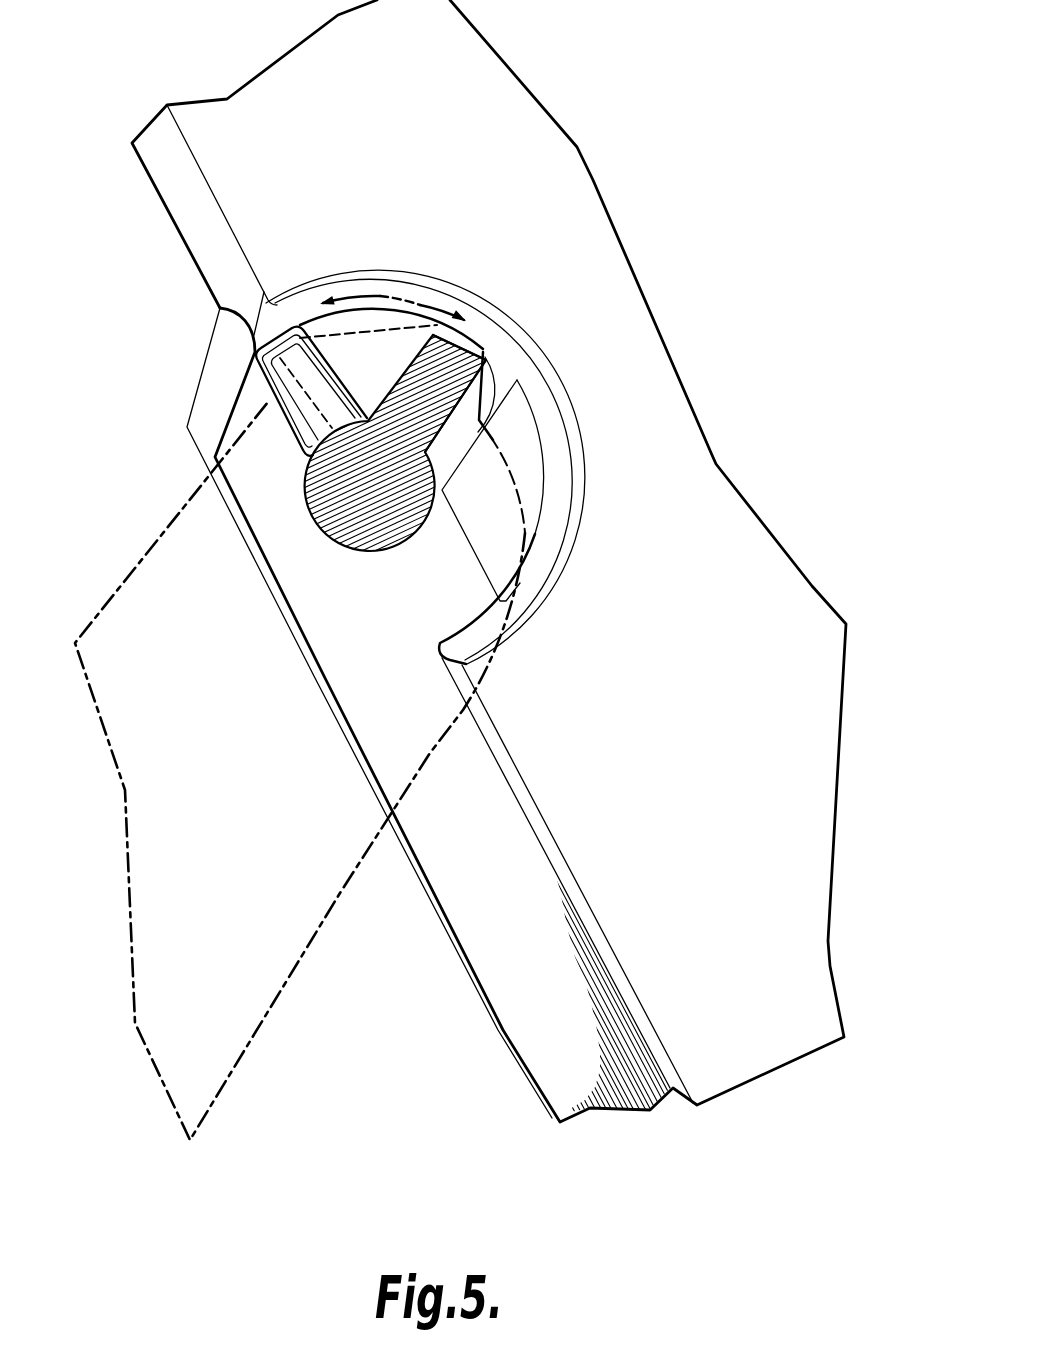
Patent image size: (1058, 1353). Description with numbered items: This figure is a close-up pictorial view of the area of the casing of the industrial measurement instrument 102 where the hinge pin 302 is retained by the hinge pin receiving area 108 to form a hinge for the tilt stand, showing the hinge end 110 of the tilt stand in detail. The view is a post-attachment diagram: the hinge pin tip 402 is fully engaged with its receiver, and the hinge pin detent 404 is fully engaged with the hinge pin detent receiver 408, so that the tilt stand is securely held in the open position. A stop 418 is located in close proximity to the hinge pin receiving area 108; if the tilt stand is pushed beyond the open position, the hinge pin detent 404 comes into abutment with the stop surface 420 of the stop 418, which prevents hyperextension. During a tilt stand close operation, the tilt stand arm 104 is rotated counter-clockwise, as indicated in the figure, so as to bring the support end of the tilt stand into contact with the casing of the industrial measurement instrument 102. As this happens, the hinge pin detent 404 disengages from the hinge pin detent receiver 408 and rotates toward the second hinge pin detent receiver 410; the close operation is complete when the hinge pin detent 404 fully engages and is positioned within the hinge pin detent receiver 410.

The industrial measurement instrument 102 is at (522, 80).
The tilt stand arm 104 is at (168, 560).
The hinge pin receiving area 108 is at (559, 442).
The hinge end 110 is at (535, 552).
The hinge pin 302 is at (284, 459).
The hinge pin tip 402 is at (333, 447).
The hinge pin detent 404 is at (443, 367).
The hinge pin detent receiver 408 is at (505, 331).
The hinge pin detent receiver 410 is at (253, 349).
The stop 418 is at (535, 493).
The stop surface 420 is at (495, 380).